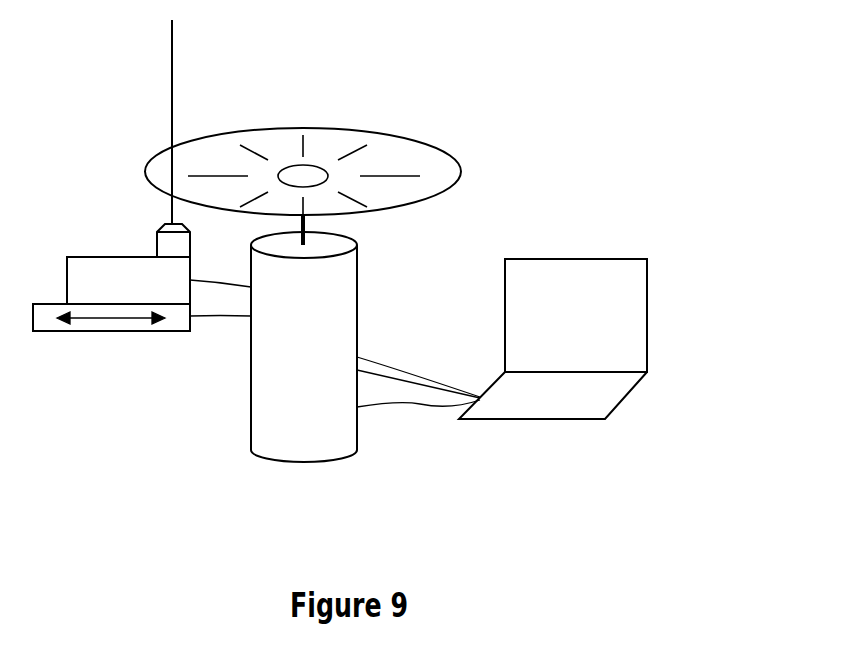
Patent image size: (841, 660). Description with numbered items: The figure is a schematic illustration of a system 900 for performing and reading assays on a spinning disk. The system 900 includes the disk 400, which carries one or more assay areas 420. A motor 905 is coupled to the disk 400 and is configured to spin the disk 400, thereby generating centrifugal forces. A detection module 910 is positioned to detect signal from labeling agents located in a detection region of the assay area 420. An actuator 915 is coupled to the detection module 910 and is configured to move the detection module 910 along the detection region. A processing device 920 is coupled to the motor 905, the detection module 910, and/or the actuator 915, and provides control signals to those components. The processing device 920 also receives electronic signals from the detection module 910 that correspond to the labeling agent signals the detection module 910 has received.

The system 900 is at (711, 70).
The disk 400 is at (420, 108).
The assay area 420 is at (420, 173).
The motor 905 is at (357, 298).
The detection module 910 is at (120, 257).
The actuator 915 is at (117, 333).
The processing device 920 is at (607, 259).